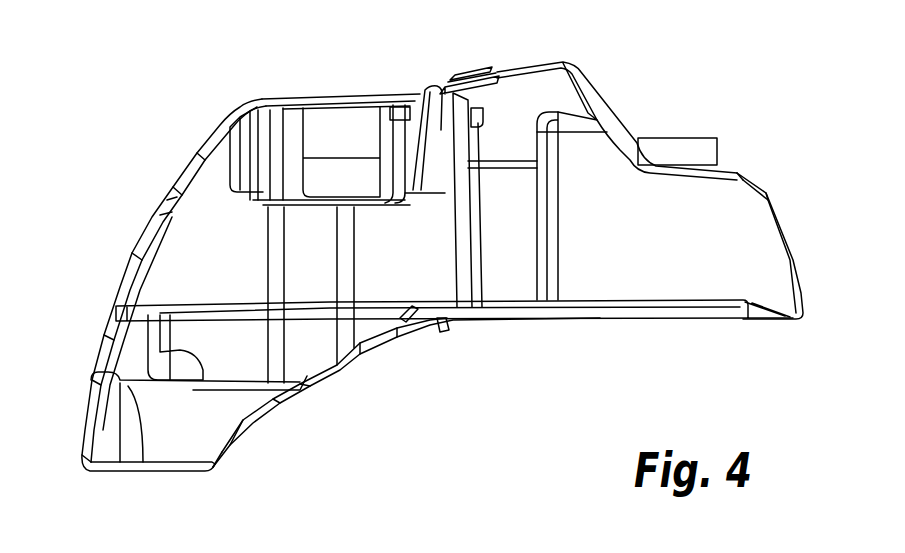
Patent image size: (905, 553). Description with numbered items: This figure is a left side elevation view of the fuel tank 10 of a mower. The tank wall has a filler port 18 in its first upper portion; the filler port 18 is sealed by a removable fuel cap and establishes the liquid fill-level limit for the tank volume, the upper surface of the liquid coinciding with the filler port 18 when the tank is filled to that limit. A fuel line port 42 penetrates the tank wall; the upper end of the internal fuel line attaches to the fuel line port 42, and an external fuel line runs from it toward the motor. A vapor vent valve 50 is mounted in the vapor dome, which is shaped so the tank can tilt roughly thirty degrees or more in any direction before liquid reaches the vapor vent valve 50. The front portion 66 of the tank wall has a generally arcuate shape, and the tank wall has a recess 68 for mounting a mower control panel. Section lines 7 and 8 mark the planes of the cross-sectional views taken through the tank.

The fuel tank 10 is at (797, 80).
The filler port 18 is at (692, 140).
The fuel line port 42 is at (478, 111).
The vapor vent valve 50 is at (465, 70).
The front portion 66 is at (152, 222).
The recess 68 is at (333, 125).
The section line 7- 7 is at (504, 60).
The section line 8- 8 is at (256, 90).